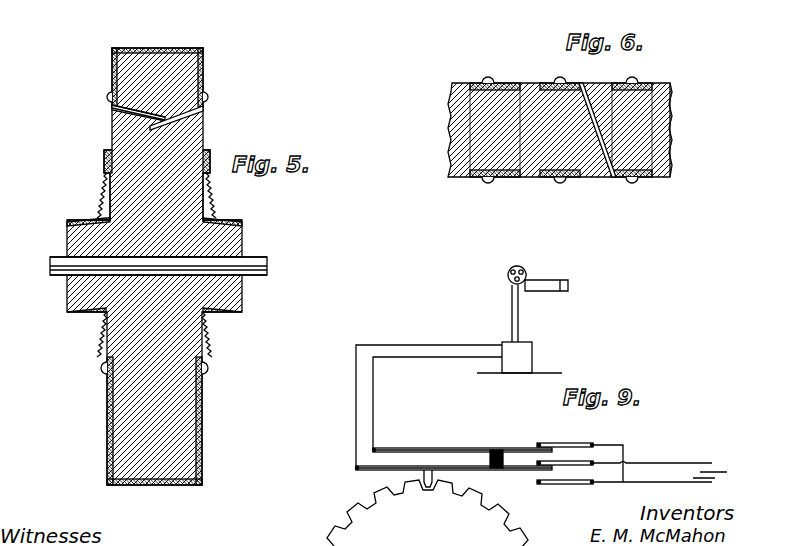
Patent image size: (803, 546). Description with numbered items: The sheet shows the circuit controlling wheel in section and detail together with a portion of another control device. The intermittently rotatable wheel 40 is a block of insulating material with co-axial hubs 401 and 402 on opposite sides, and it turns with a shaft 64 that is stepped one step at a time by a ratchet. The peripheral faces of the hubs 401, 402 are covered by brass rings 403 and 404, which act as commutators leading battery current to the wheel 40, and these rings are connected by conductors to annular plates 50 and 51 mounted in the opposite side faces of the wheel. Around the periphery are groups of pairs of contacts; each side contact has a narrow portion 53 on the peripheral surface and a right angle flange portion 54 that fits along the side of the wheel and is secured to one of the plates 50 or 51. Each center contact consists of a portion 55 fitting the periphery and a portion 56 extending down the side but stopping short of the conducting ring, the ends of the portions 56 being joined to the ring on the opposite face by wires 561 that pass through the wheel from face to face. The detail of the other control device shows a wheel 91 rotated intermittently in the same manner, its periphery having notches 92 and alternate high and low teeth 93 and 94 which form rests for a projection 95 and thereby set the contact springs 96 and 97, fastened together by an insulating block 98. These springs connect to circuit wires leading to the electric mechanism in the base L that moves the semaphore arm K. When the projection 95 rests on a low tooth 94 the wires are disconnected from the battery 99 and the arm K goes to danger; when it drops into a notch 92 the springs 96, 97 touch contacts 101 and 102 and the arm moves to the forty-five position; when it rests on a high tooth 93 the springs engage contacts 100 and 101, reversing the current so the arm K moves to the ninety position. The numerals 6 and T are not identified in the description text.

In FIG. 5, the intermittently rotatable wheel 40 is at (107, 412).
In FIG. 6, the intermittently rotatable wheel 40 is at (450, 102).
In FIG. 5, the center contact peripheral portion 55 is at (178, 48).
In FIG. 6, the center contact peripheral portion 55 is at (552, 83).
In FIG. 5, the wires 561 is at (125, 82).
In FIG. 6, the wires 561 is at (605, 178).
In FIG. 5, the center contact side portion 56 is at (206, 92).
In FIG. 6, the center contact side portion 56 is at (578, 83).
In FIG. 5, the passage 6 is at (101, 118).
In FIG. 5, the annular plate 51 is at (104, 152).
In FIG. 5, the annular plate 50 is at (210, 160).
In FIG. 5, the brass ring 404 is at (84, 220).
In FIG. 5, the brass ring 403 is at (236, 220).
In FIG. 5, the co-axial hub 402 is at (67, 238).
In FIG. 5, the co-axial hub 401 is at (242, 248).
In FIG. 5, the shaft 64 is at (268, 268).
In FIG. 5, the right angle flange portion 54 is at (202, 428).
In FIG. 6, the right angle flange portion 54 is at (500, 83).
In FIG. 5, the narrow contact portion 53 is at (178, 487).
In FIG. 6, the narrow contact portion 53 is at (675, 134).
In FIG. 9, the semaphore signal arm K is at (555, 280).
In FIG. 9, the semaphore tower base L is at (524, 366).
In FIG. 9, the circuit wires T is at (356, 402).
In FIG. 9, the contact spring 96 is at (408, 450).
In FIG. 9, the contact spring 97 is at (433, 466).
In FIG. 9, the insulating block 98 is at (490, 450).
In FIG. 9, the projection 95 is at (425, 480).
In FIG. 9, the wheel 91 is at (465, 496).
In FIG. 9, the notches 92 is at (498, 506).
In FIG. 9, the high teeth 93 is at (458, 492).
In FIG. 9, the low teeth 94 is at (510, 490).
In FIG. 9, the contact 100 is at (588, 440).
In FIG. 9, the contact 101 is at (580, 463).
In FIG. 9, the contact 102 is at (546, 484).
In FIG. 9, the battery 99 is at (718, 470).